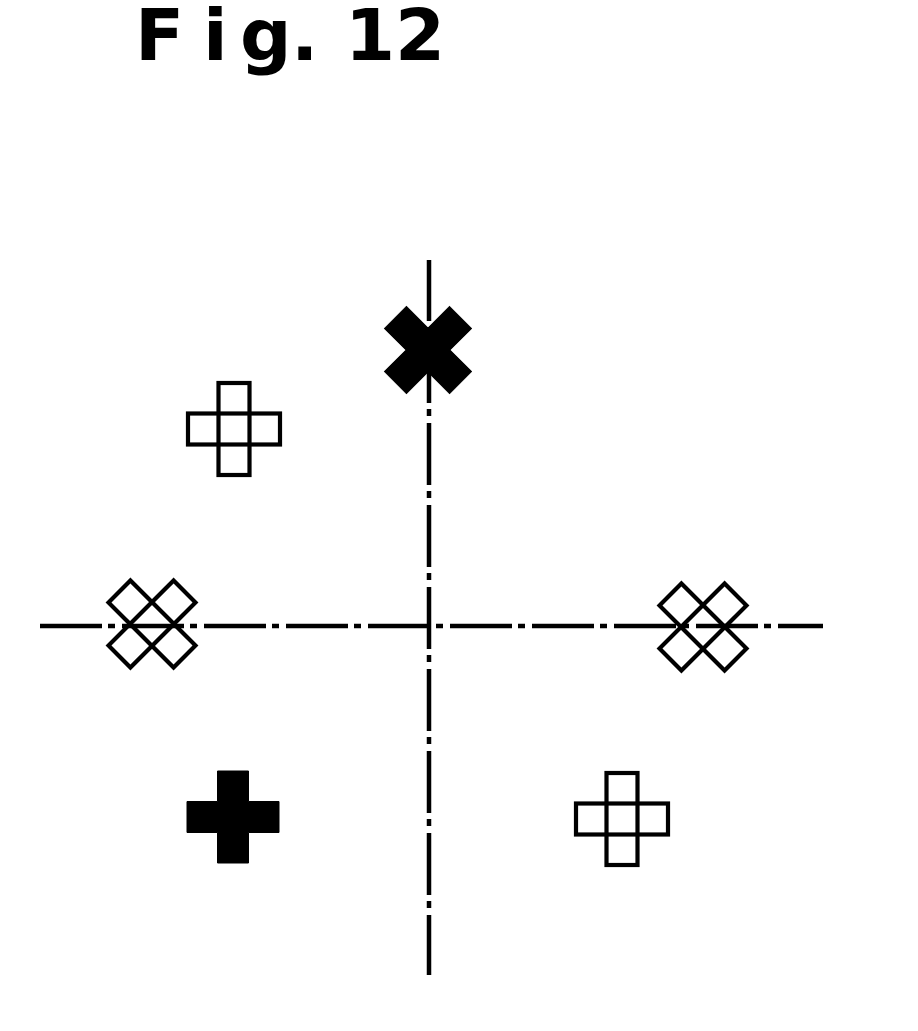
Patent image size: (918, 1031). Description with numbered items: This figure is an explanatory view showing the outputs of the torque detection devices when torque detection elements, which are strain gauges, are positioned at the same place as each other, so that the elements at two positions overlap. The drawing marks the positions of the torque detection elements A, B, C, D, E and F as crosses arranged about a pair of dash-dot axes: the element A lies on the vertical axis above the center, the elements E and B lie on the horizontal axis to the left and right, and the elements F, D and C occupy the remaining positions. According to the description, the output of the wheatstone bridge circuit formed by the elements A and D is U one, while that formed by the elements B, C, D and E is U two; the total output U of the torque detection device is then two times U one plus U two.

The torque detection element A is at (438, 338).
The torque detection element B is at (713, 623).
The torque detection element C is at (647, 822).
The torque detection element D is at (233, 845).
The torque detection element E is at (145, 624).
The sixth marker position (outlined plus cross) F is at (233, 405).